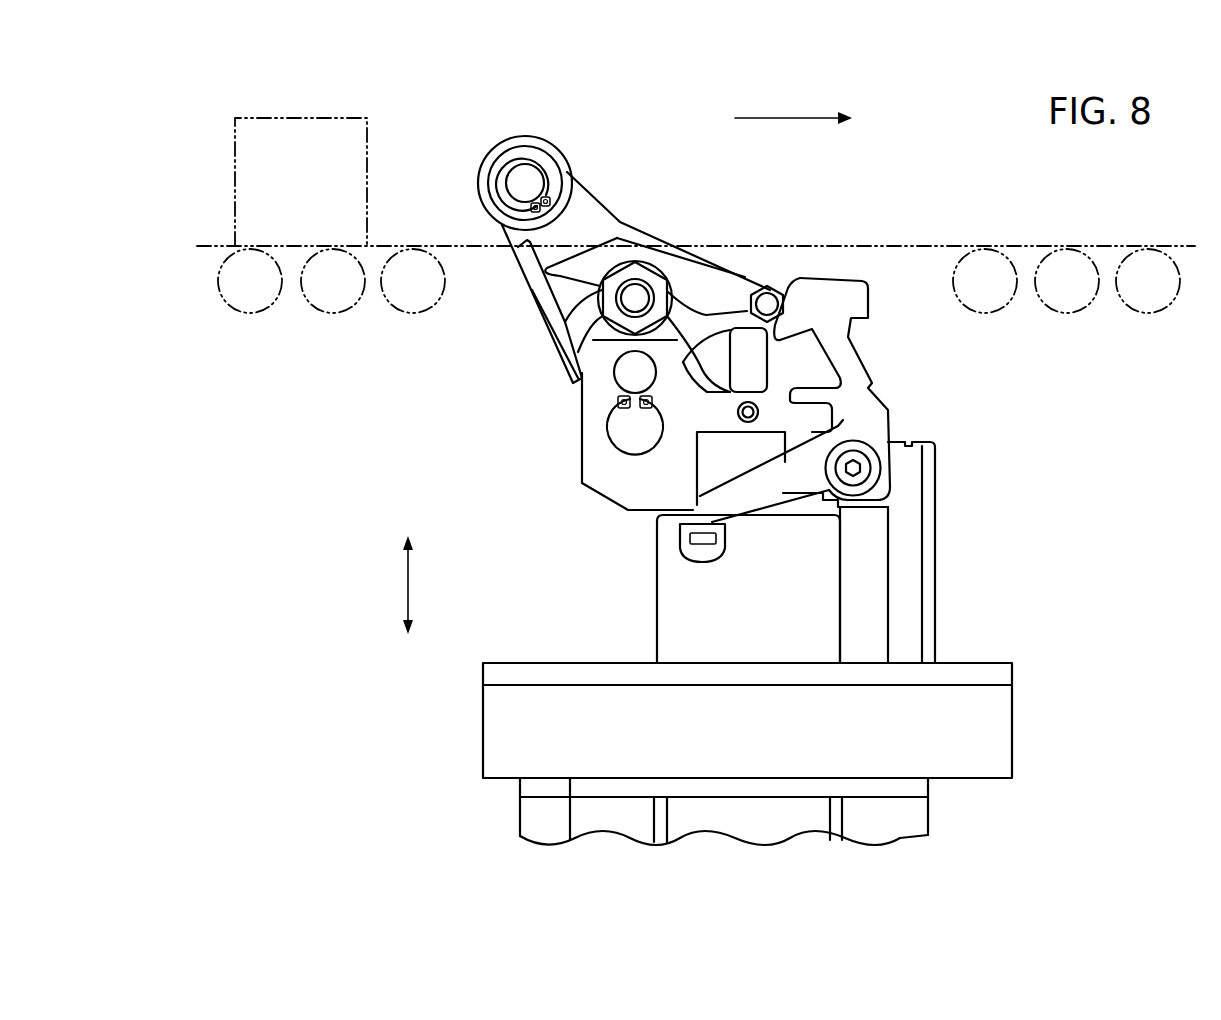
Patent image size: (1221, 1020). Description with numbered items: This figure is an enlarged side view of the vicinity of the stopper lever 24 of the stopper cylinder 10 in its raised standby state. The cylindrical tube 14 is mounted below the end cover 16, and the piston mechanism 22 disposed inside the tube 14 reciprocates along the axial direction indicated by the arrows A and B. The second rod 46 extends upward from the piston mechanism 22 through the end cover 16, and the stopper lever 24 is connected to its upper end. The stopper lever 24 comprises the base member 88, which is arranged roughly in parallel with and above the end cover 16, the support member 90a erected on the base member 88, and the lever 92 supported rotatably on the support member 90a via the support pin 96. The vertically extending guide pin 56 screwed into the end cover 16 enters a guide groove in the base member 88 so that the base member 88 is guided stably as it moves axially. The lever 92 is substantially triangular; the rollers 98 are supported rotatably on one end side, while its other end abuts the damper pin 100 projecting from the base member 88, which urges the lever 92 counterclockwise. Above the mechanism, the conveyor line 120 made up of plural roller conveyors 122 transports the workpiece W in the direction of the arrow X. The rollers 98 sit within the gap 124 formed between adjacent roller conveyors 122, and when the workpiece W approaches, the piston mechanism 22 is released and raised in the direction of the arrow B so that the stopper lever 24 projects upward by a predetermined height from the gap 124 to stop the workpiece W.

The stopper cylinder 10 is at (1090, 471).
The cylindrical tube 14 is at (937, 810).
The end cover 16 is at (1024, 720).
The piston mechanism 22 is at (643, 567).
The stopper lever 24 is at (664, 202).
The second rod 46 is at (677, 612).
The guide pin 56 is at (922, 574).
The base member 88 is at (912, 477).
The support member 90a is at (598, 488).
The lever 92 is at (577, 210).
The support pin 96 is at (626, 375).
The rollers 98 is at (490, 209).
The damper pin 100 is at (755, 367).
The conveyor line 120 is at (222, 178).
The roller conveyors 122 is at (250, 300).
The gap 124 is at (835, 256).
The workpiece W is at (355, 186).
The conveying direction X is at (793, 104).
The downward direction A is at (408, 651).
The upward direction B is at (408, 569).